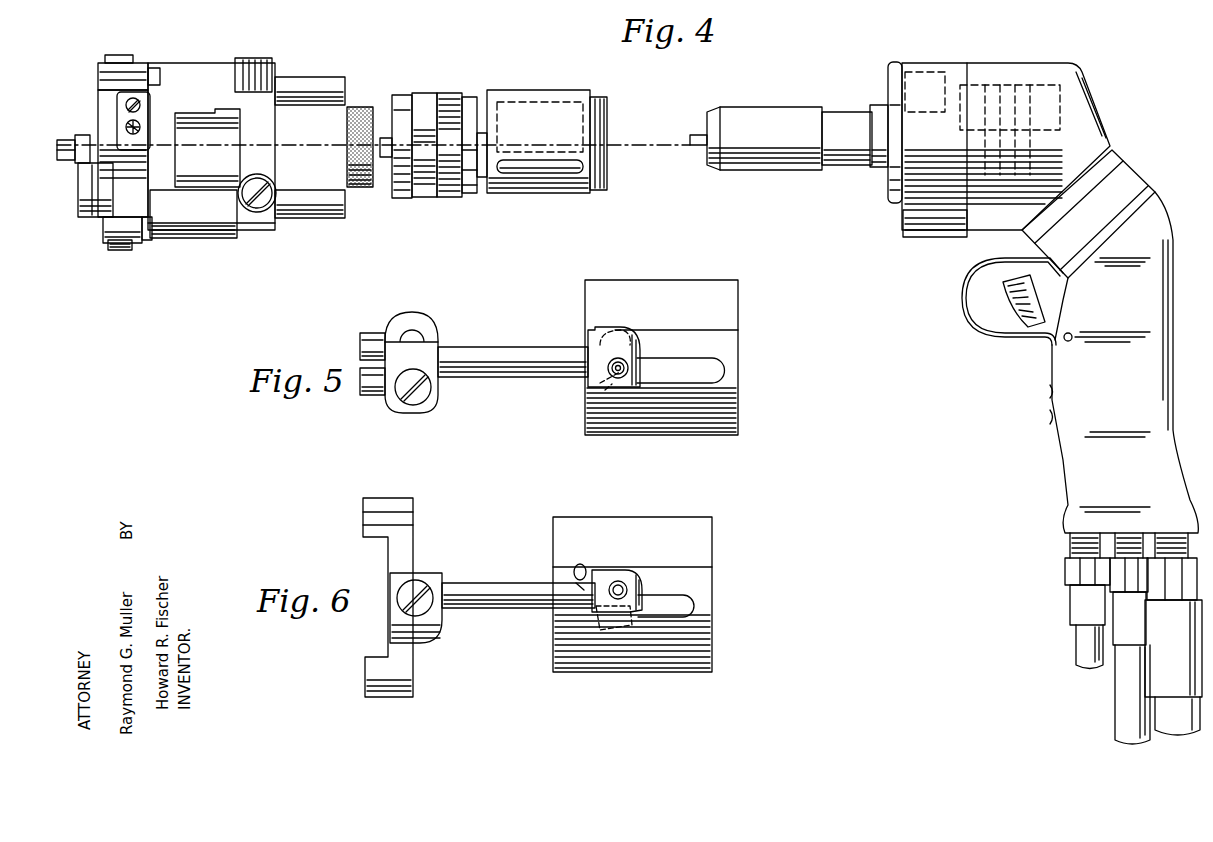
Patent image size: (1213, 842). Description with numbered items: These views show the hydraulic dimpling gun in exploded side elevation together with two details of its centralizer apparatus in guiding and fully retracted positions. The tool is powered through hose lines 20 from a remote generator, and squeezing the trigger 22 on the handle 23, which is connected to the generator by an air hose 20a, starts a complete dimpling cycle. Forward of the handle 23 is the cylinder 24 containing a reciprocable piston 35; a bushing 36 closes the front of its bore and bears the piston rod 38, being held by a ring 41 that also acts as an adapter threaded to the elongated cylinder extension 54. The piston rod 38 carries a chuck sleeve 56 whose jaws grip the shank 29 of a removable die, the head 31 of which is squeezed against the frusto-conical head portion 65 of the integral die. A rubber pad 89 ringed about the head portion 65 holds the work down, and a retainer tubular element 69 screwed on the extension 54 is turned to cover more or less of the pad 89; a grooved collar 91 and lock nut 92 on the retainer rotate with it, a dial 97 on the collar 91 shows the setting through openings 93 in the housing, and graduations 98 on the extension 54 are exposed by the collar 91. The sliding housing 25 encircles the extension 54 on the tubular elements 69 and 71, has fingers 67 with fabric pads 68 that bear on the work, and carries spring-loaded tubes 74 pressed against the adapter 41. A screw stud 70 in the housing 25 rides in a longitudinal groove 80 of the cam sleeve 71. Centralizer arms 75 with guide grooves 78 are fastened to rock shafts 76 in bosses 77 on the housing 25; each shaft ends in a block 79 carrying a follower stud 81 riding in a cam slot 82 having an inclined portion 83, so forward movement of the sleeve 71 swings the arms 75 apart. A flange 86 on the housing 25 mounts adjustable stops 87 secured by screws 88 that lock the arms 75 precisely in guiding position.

In FIG. 4, the hose lines 20 is at (1165, 660).
In FIG. 4, the air hose 20a is at (1080, 638).
In FIG. 4, the trigger 22 is at (1020, 320).
In FIG. 4, the handle 23 is at (1132, 401).
In FIG. 4, the cylinder 24 is at (1100, 130).
In FIG. 4, the sliding housing 25 is at (258, 238).
In FIG. 4, the shank 29 is at (72, 165).
In FIG. 4, the head 31 is at (67, 162).
In FIG. 4, the piston 35 is at (1012, 95).
In FIG. 4, the bushing 36 is at (876, 165).
In FIG. 4, the piston rod 38 is at (840, 115).
In FIG. 4, the ring 41 is at (889, 68).
In FIG. 4, the cylinder extension 54 is at (480, 100).
In FIG. 4, the sleeve 56 is at (760, 117).
In FIG. 4, the head portion 65 is at (386, 160).
In FIG. 4, the fingers 67 is at (112, 225).
In FIG. 4, the fabric pad 68 is at (90, 205).
In FIG. 4, the tubular element 69 is at (403, 198).
In FIG. 4, the screw stud 70 is at (272, 192).
In FIG. 5, the tubular element 71 is at (684, 282).
In FIG. 6, the tubular element 71 is at (664, 523).
In FIG. 4, the tube 74 is at (335, 80).
In FIG. 4, the centralizer arms 75 is at (100, 82).
In FIG. 5, the centralizer arms 75 is at (415, 314).
In FIG. 6, the centralizer arms 75 is at (392, 498).
In FIG. 4, the rock shafts 76 is at (148, 65).
In FIG. 5, the rock shafts 76 is at (515, 368).
In FIG. 6, the rock shafts 76 is at (512, 606).
In FIG. 4, the bosses 77 is at (190, 68).
In FIG. 6, the grooves 78 is at (413, 520).
In FIG. 4, the block 79 is at (245, 58).
In FIG. 5, the block 79 is at (598, 375).
In FIG. 6, the block 79 is at (604, 570).
In FIG. 4, the groove 80 is at (548, 160).
In FIG. 5, the follower stud 81 is at (628, 365).
In FIG. 6, the follower stud 81 is at (622, 580).
In FIG. 5, the cam slot 82 is at (690, 378).
In FIG. 6, the cam slot 82 is at (668, 600).
In FIG. 5, the inclined portion 83 is at (585, 405).
In FIG. 6, the inclined portion 83 is at (572, 566).
In FIG. 4, the flange 86 is at (146, 240).
In FIG. 4, the adjustable stops 87 is at (126, 128).
In FIG. 4, the screws 88 is at (120, 110).
In FIG. 4, the rubber pad 89 is at (347, 125).
In FIG. 4, the collar 91 is at (450, 197).
In FIG. 4, the lock nut 92 is at (425, 93).
In FIG. 4, the openings 93 is at (190, 122).
In FIG. 4, the dial 97 is at (470, 193).
In FIG. 4, the graduations 98 is at (488, 155).